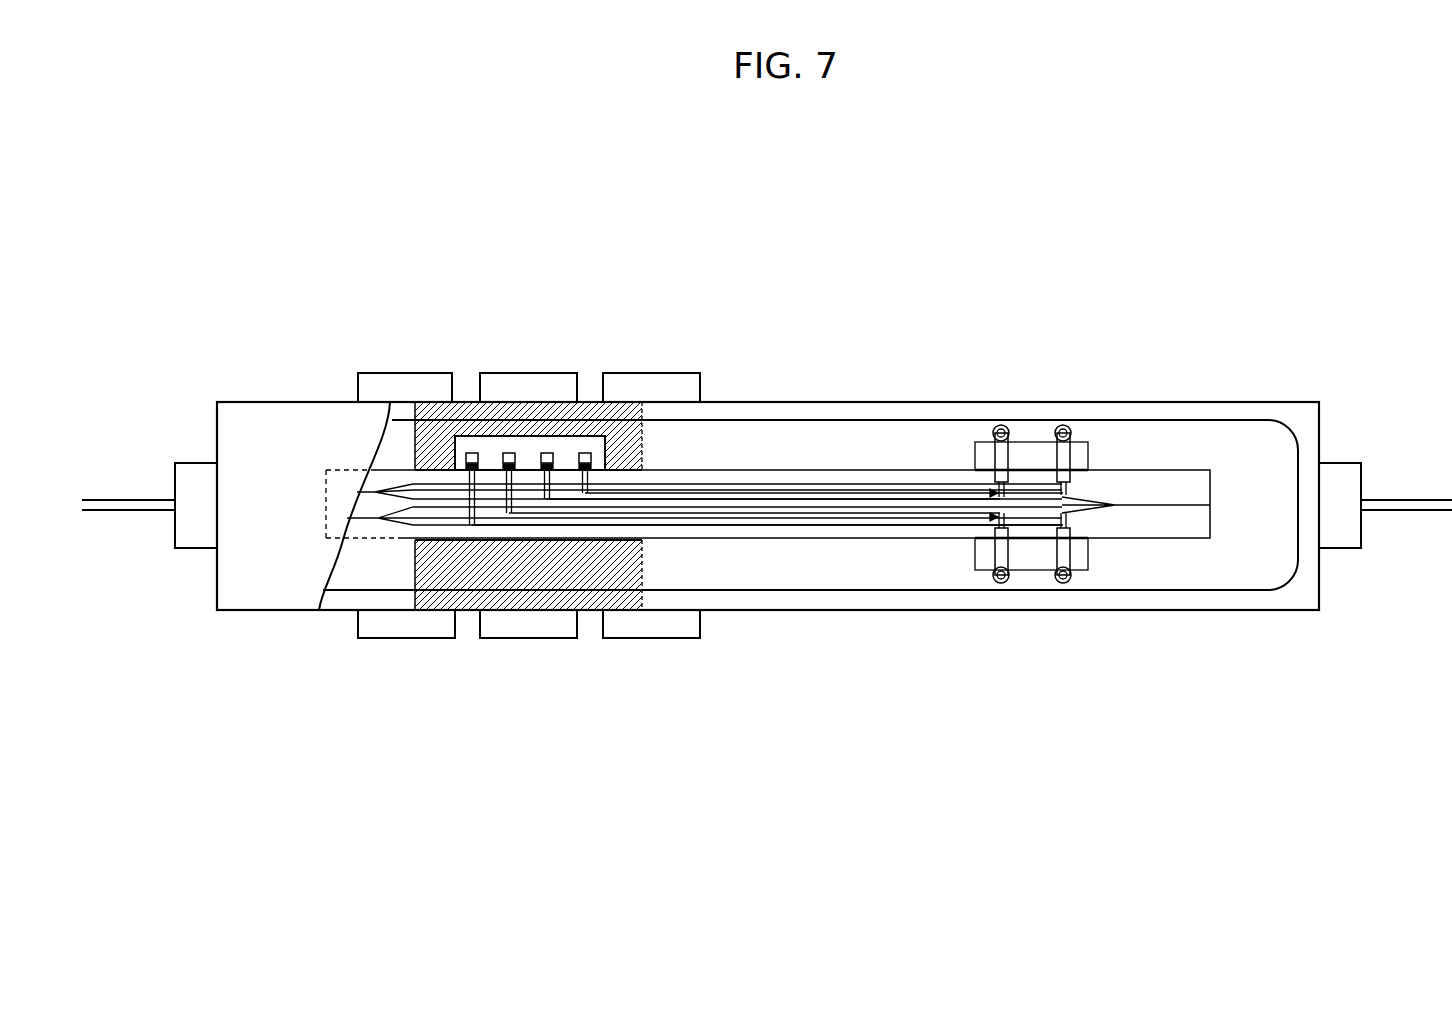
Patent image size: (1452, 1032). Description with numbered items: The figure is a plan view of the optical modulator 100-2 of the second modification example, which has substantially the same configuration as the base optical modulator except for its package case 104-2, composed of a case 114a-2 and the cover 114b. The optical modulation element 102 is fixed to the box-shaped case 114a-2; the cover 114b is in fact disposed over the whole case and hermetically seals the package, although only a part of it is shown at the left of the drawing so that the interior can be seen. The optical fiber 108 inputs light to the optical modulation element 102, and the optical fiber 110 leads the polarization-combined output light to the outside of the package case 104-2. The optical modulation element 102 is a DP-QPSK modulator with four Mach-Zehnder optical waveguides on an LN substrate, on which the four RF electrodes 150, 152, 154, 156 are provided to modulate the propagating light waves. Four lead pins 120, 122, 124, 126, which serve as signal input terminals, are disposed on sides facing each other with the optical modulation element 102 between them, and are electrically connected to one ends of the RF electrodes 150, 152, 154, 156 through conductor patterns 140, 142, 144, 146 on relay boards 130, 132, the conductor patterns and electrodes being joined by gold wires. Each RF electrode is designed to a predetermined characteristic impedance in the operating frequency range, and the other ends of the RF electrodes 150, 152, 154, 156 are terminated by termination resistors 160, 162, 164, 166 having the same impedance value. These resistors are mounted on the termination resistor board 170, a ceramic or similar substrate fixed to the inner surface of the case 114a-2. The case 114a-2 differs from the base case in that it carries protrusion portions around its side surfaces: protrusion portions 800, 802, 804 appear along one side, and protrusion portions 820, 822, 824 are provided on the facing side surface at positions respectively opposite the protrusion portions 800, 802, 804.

The optical modulator 100-2 is at (270, 240).
The optical modulation element 102 is at (685, 470).
The package case 104-2 is at (470, 737).
The optical fiber 108 is at (1405, 498).
The optical fiber 110 is at (125, 500).
The case 114a-2 is at (330, 612).
The cover 114b is at (252, 585).
The lead pin 120 is at (994, 428).
The lead pin 122 is at (1066, 425).
The lead pin 124 is at (995, 581).
The lead pin 126 is at (1066, 583).
The relay board 130 is at (1027, 450).
The relay board 132 is at (1020, 572).
The conductor pattern 140 is at (993, 450).
The conductor pattern 142 is at (1065, 452).
The conductor pattern 144 is at (993, 560).
The conductor pattern 146 is at (1065, 556).
The RF electrode 150 is at (810, 488).
The RF electrode 152 is at (832, 500).
The RF electrode 154 is at (805, 523).
The RF electrode 156 is at (833, 512).
The termination resistor 160 is at (585, 452).
The termination resistor 162 is at (547, 452).
The termination resistor 164 is at (509, 452).
The termination resistor 166 is at (471, 452).
The termination resistor board 170 is at (458, 442).
The protrusion portion 800 is at (422, 627).
The protrusion portion 802 is at (545, 627).
The protrusion portion 804 is at (663, 627).
The protrusion portion 820 is at (383, 387).
The protrusion portion 822 is at (503, 382).
The protrusion portion 824 is at (657, 380).